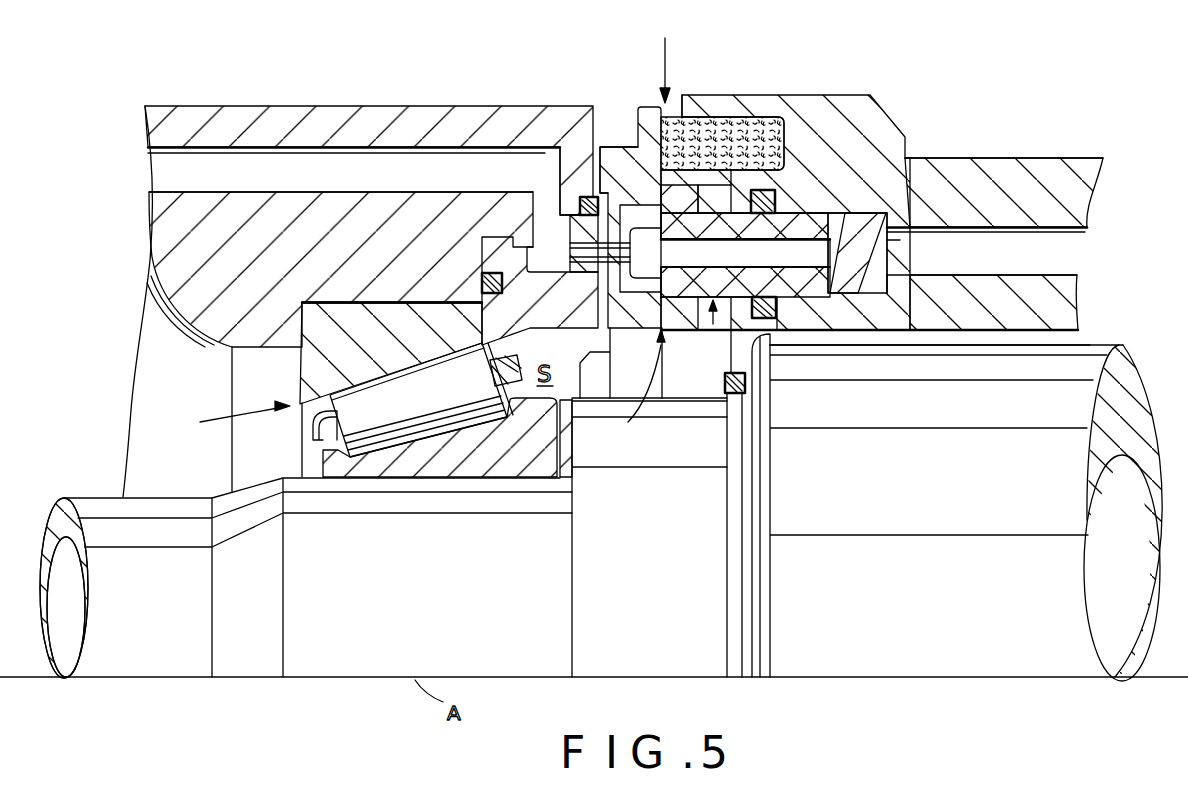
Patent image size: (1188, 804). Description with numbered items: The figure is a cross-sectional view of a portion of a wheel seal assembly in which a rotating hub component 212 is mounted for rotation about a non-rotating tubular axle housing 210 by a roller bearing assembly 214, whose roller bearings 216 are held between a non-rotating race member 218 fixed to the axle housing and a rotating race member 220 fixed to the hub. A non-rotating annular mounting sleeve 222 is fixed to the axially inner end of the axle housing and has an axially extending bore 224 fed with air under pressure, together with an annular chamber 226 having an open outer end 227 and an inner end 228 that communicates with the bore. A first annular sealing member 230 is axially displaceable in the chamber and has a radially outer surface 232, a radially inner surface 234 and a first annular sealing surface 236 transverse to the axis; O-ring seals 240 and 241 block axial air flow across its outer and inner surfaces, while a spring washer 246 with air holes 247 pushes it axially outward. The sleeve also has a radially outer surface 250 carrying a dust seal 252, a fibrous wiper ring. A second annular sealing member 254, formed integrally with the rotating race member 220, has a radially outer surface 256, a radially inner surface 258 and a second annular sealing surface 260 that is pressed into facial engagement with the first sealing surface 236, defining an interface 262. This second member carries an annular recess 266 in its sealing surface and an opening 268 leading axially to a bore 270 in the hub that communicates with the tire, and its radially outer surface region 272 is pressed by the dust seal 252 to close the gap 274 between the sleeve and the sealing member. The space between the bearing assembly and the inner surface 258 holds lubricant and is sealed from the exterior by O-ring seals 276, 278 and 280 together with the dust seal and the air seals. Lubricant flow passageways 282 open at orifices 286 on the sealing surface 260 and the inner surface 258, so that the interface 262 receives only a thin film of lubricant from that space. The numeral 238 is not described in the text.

The non-rotating tubular axle housing 210 is at (97, 503).
The rotating hub component 212 is at (190, 270).
The roller bearing assembly 214 is at (222, 419).
The roller bearings 216 is at (413, 430).
The non-rotating race member 218 is at (363, 470).
The rotating race member 220 is at (300, 358).
The non-rotating annular mounting sleeve 222 is at (1033, 165).
The axially extending bore 224 is at (1058, 260).
The annular chamber 226 is at (890, 293).
The open outer end 227 is at (762, 378).
The inner end 228 is at (870, 270).
The first annular sealing member 230 is at (832, 216).
The radially outer surface 232 is at (810, 222).
The radially inner surface 234 is at (810, 332).
The first annular sealing surface 236 is at (643, 503).
The sleeve end 238 is at (870, 322).
The O-ring seal 240 is at (772, 192).
The O-ring seal 241 is at (767, 322).
The spring washer 246 is at (890, 225).
The air holes 247 is at (890, 247).
The radially outer surface 250 is at (768, 133).
The dust seal 252 is at (723, 138).
The second annular sealing member 254 is at (646, 107).
The radially outer surface 256 is at (618, 147).
The radially inner surface 258 is at (590, 335).
The second annular sealing surface 260 is at (713, 324).
The interface 262 is at (665, 345).
The annular recess 266 is at (643, 277).
The opening 268 is at (588, 257).
The bore 270 is at (170, 172).
The radially outer surface region 272 is at (683, 120).
The gap 274 is at (690, 62).
The O-ring seal 276 is at (482, 278).
The O-ring seal 278 is at (553, 167).
The O-ring seal 280 is at (748, 395).
The lubricant flow passageways 282 is at (580, 197).
The orifices 286 is at (667, 232).